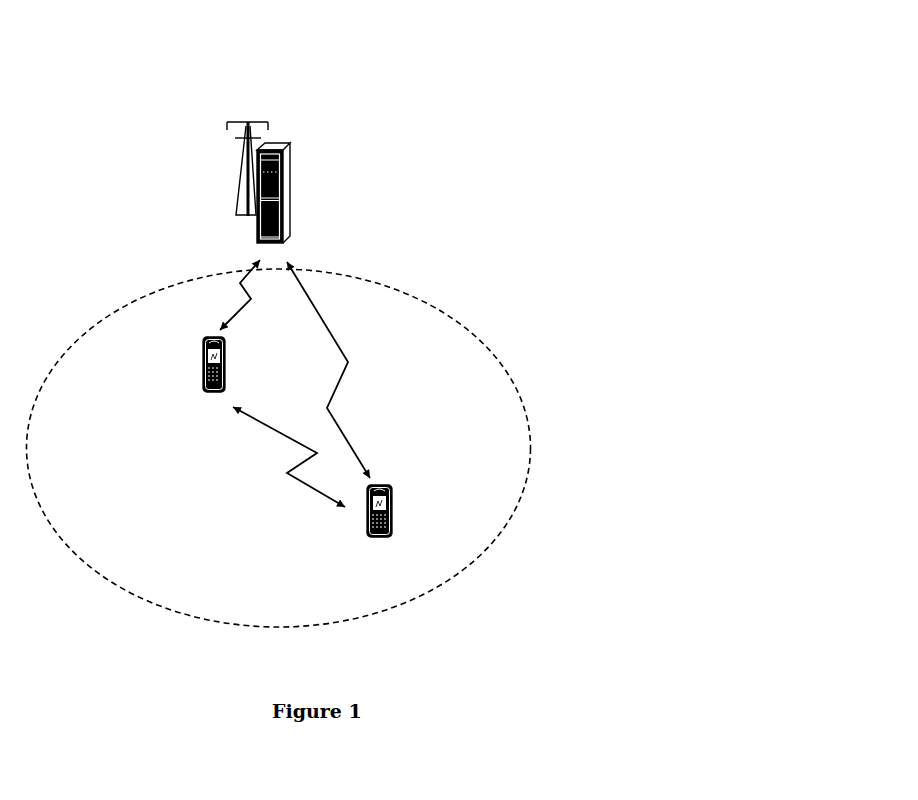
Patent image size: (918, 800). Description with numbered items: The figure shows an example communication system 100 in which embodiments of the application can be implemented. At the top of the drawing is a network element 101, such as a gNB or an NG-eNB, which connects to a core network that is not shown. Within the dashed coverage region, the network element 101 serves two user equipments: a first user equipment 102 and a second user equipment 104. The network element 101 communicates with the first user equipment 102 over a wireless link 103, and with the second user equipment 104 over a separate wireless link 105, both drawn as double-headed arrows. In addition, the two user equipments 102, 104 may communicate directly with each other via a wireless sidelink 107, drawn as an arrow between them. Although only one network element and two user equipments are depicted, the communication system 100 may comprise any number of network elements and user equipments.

The communication system 100 is at (673, 92).
The network element 101 is at (210, 137).
The user equipment 102 is at (200, 386).
The wireless link 103 is at (228, 302).
The user equipment 104 is at (393, 477).
The wireless link 105 is at (348, 338).
The wireless sidelink 107 is at (267, 473).